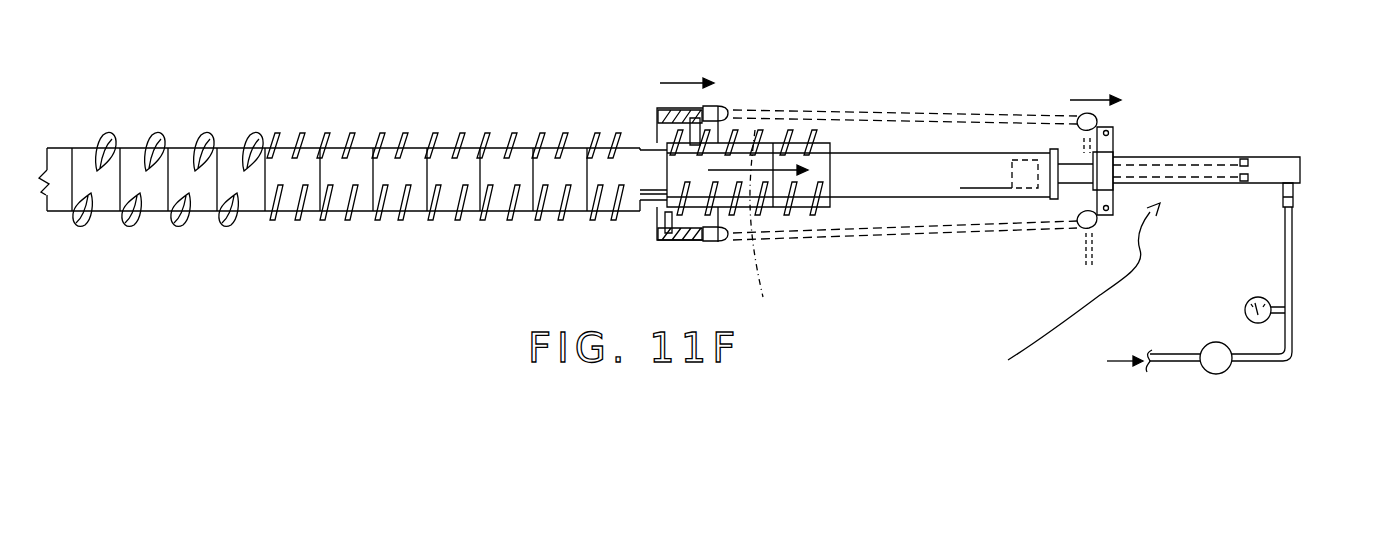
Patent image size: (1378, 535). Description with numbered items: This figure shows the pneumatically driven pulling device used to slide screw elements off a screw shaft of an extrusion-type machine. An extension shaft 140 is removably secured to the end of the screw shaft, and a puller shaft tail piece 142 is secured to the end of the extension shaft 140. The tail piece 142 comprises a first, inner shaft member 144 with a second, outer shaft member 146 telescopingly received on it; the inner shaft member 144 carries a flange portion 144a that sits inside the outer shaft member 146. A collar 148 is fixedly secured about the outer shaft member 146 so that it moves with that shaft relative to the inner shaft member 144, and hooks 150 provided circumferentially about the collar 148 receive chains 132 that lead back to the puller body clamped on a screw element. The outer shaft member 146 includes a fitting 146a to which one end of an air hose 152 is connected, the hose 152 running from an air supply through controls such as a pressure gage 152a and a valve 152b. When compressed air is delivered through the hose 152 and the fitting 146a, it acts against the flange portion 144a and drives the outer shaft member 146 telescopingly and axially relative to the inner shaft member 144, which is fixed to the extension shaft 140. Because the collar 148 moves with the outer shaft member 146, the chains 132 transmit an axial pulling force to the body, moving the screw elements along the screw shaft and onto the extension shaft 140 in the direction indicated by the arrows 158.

The chains 132 is at (978, 230).
The extension shaft 140 is at (928, 177).
The puller shaft tail piece 142 is at (1064, 299).
The first shaft member 144 is at (1073, 157).
The flange portion 144a is at (1233, 195).
The second shaft member 146 is at (1272, 160).
The fitting 146a is at (1293, 188).
The collar 148 is at (1113, 143).
The hooks 150 is at (1103, 121).
The air hose 152 is at (1297, 262).
The pressure gage 152a is at (1245, 308).
The valve 152b is at (1209, 376).
The arrows 158 is at (1095, 92).